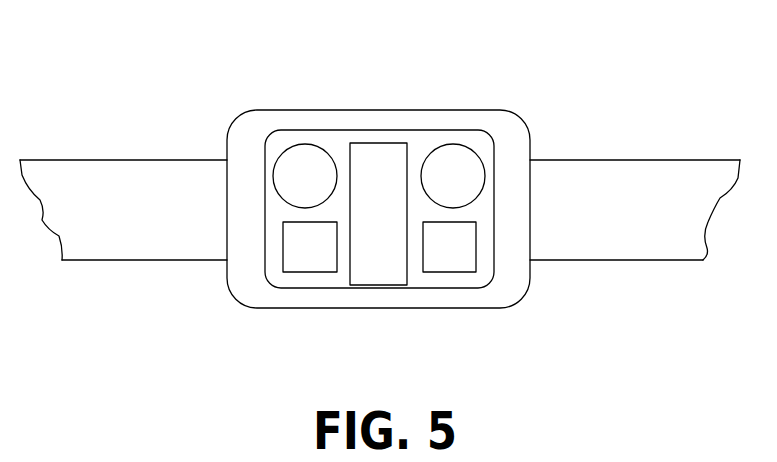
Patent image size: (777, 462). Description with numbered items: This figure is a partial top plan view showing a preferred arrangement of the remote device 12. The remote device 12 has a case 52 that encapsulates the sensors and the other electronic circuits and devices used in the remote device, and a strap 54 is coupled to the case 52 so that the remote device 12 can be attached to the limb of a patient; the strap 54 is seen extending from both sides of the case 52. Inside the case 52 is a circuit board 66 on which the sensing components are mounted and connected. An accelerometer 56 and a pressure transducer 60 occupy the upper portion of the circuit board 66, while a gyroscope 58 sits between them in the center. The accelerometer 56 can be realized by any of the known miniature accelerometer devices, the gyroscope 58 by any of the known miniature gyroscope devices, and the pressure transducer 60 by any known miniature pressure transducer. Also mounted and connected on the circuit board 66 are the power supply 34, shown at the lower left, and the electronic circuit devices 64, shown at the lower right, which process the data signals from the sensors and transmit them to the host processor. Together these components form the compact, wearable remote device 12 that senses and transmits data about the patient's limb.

The remote device 12 is at (352, 78).
The power supply 34 is at (297, 257).
The case 52 is at (467, 110).
The strap 54 is at (132, 180).
The accelerometer 56 is at (302, 160).
The gyroscope 58 is at (383, 263).
The pressure transducer 60 is at (465, 165).
The electronic circuit devices 64 is at (460, 257).
The circuit board 66 is at (417, 280).